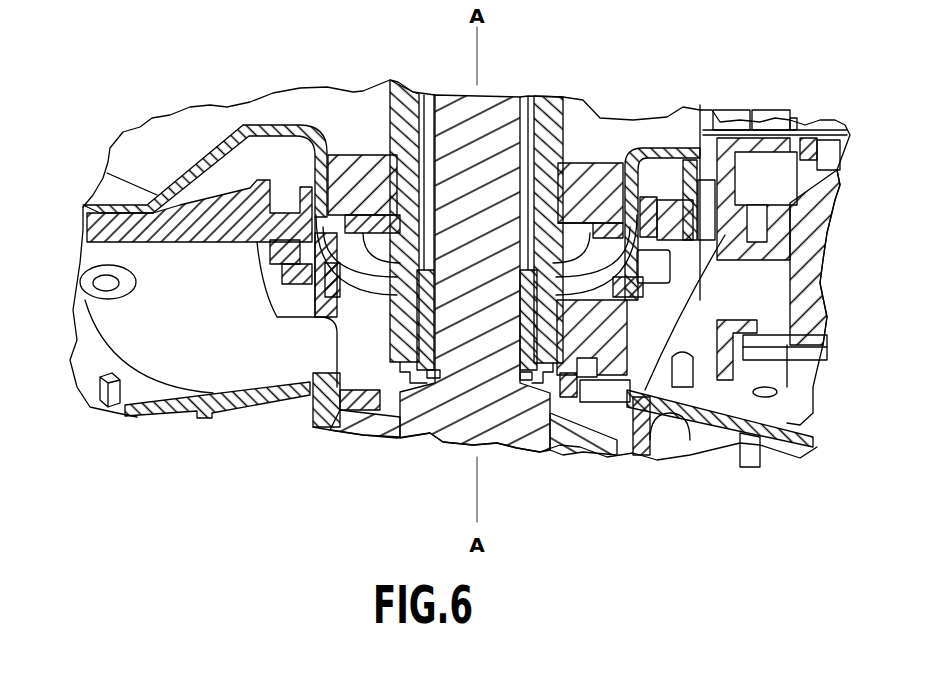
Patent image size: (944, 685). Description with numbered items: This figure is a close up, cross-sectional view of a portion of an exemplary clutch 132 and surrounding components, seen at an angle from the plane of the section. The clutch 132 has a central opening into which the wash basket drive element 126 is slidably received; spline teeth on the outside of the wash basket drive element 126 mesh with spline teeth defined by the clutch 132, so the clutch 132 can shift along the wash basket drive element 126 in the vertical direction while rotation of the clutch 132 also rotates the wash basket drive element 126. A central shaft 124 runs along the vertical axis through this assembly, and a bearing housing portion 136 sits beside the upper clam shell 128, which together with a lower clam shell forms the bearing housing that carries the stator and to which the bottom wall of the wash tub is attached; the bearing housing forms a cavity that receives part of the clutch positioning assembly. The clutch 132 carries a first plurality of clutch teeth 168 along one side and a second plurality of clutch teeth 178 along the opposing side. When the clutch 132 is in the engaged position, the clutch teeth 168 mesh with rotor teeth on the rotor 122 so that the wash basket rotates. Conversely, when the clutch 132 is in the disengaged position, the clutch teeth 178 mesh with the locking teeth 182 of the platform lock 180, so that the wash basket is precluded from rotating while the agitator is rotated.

The rotor 122 is at (187, 410).
The shaft 124 is at (487, 107).
The wash basket drive element 126 is at (547, 100).
The upper clam shell 128 is at (257, 132).
The clutch 132 is at (297, 340).
The bearing housing 136 is at (357, 167).
The first plurality of clutch teeth 168 is at (345, 377).
The second plurality of clutch teeth 178 is at (660, 308).
The platform lock 180 is at (203, 215).
The locking teeth 182 is at (290, 271).